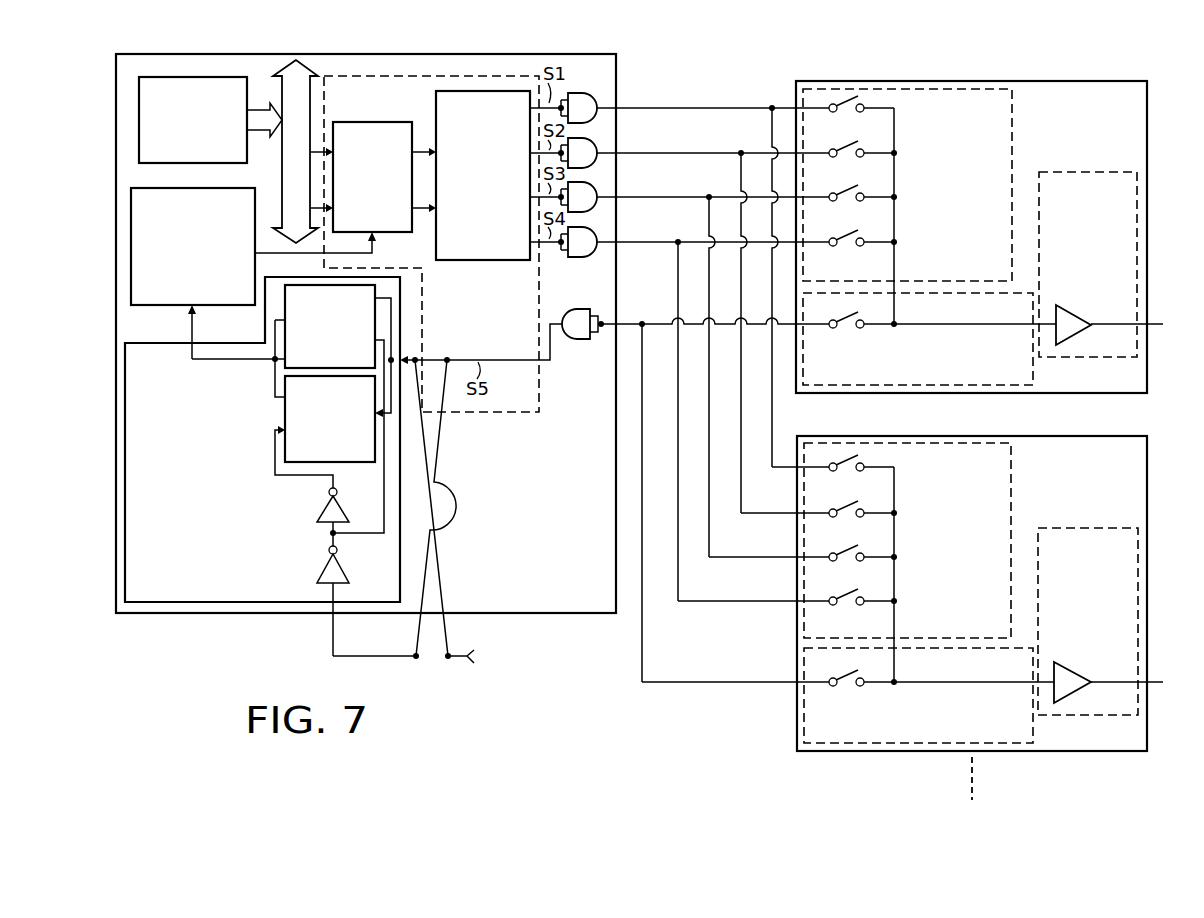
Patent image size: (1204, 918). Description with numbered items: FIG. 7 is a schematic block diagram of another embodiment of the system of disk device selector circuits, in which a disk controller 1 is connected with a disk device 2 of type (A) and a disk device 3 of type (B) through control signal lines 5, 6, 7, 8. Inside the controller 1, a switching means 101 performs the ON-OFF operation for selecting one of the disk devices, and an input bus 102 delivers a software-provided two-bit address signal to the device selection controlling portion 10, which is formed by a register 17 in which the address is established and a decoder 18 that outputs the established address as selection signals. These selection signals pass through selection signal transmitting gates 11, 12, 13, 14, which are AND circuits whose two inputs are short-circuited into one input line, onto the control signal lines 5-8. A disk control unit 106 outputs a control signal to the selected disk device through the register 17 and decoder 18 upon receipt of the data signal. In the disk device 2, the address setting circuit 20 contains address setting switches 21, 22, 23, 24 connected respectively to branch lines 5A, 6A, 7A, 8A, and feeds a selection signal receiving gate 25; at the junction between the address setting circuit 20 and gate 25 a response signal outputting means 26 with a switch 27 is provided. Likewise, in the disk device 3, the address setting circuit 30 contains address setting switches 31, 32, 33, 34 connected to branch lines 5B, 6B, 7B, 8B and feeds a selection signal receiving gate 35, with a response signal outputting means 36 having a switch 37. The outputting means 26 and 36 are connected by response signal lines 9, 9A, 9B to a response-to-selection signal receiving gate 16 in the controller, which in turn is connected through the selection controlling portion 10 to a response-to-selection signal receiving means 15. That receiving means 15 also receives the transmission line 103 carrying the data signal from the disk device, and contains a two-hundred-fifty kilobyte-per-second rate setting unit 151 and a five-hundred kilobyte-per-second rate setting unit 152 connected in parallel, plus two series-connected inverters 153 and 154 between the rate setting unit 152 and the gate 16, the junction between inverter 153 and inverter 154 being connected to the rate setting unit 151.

The disk controller 1 is at (181, 615).
The disk device of type (A) 2 is at (1148, 149).
The disk device of type (B) 3 is at (1148, 482).
The control signal line 5 is at (673, 106).
The control signal line 6 is at (673, 151).
The control signal line 7 is at (661, 195).
The control signal line 8 is at (646, 240).
The response signal line 9 is at (633, 322).
The branch line 5A is at (778, 108).
The branch line 6A is at (752, 152).
The branch line 7A is at (716, 196).
The branch line 8A is at (683, 240).
The response signal line 9A is at (657, 326).
The branch line 5B is at (773, 413).
The branch line 6B is at (741, 494).
The branch line 7B is at (710, 539).
The branch line 8B is at (680, 587).
The response signal line 9B is at (678, 682).
The device selection controlling portion 10 is at (541, 396).
The selection signal transmitting gate 11 is at (589, 95).
The selection signal transmitting gate 12 is at (589, 151).
The selection signal transmitting gate 13 is at (589, 195).
The selection signal transmitting gate 14 is at (589, 239).
The response-to-selection signal receiving means 15 is at (129, 343).
The response-to-selection signal receiving gate 16 is at (575, 307).
The register 17 is at (363, 122).
The decoder 18 is at (476, 91).
The address setting circuit 20 is at (1013, 158).
The address setting switch 21 is at (845, 100).
The address setting switch 22 is at (846, 147).
The address setting switch 23 is at (846, 191).
The address setting switch 24 is at (846, 236).
The selection signal receiving gate 25 is at (1080, 338).
The response signal outputting means 26 is at (1017, 293).
The switch 27 is at (844, 320).
The address setting circuit 30 is at (1012, 518).
The address setting switch 31 is at (843, 458).
The address setting switch 32 is at (849, 509).
The address setting switch 33 is at (849, 553).
The address setting switch 34 is at (849, 597).
The selection signal receiving gate 35 is at (1078, 696).
The response signal outputting means 36 is at (1016, 650).
The switch 37 is at (846, 678).
The switching means 101 is at (199, 78).
The input bus 102 is at (282, 193).
The transmission line 103 is at (333, 649).
The disk control unit 106 is at (225, 306).
The 250 KB/S-rate setting unit 151 is at (317, 285).
The 500 KB/S-rate setting unit 152 is at (285, 414).
The inverter 153 is at (345, 575).
The inverter 154 is at (340, 510).